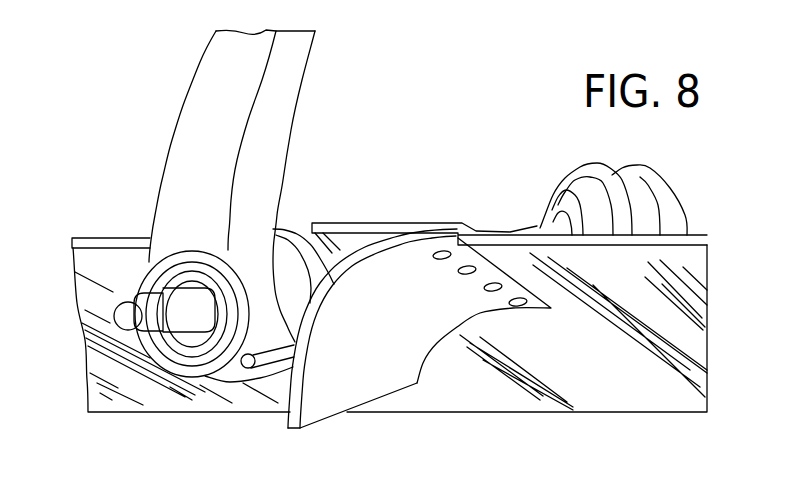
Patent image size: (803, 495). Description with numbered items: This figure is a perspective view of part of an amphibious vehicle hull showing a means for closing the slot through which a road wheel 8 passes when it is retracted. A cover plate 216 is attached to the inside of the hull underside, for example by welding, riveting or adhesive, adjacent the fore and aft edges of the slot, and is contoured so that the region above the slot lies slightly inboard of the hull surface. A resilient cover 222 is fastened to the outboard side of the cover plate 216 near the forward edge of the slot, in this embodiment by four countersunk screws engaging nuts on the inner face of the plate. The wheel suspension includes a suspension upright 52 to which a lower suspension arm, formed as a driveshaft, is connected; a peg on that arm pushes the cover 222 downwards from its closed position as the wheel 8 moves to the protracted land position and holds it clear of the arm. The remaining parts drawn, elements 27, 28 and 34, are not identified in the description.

The wheels 8 is at (624, 404).
The bracket 27 is at (284, 324).
The pivot pin 28 is at (265, 364).
The mounting flange 34 is at (75, 236).
The suspension upright 52 is at (200, 65).
The cover plate 216 is at (366, 222).
The resilient cover 222 is at (320, 413).